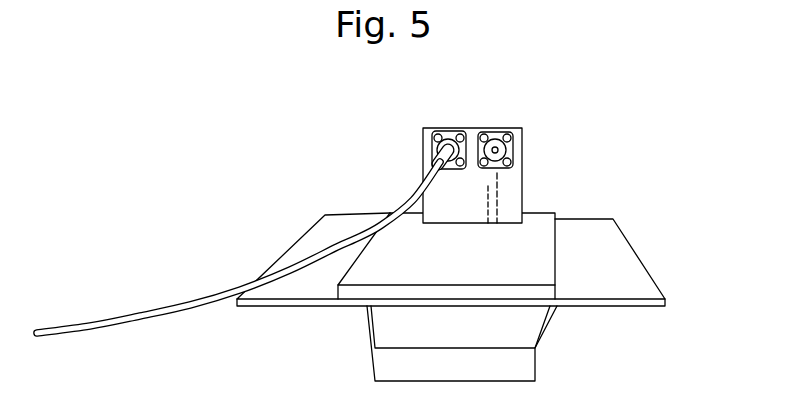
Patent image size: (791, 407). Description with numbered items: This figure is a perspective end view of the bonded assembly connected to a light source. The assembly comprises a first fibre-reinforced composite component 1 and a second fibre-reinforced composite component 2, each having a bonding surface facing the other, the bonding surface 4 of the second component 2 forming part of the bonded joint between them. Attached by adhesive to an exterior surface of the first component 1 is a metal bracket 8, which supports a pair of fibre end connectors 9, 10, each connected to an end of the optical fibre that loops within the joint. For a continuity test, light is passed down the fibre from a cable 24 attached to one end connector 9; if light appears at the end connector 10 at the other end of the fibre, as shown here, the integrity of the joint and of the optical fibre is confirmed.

The first fibre-reinforced composite component 1 is at (542, 248).
The second fibre-reinforced composite component 2 is at (620, 253).
The bonding surface 4 is at (632, 290).
The metal bracket 8 is at (502, 188).
The fibre end connector 9 is at (450, 140).
The fibre end connector 10 is at (495, 137).
The cable 24 is at (335, 245).